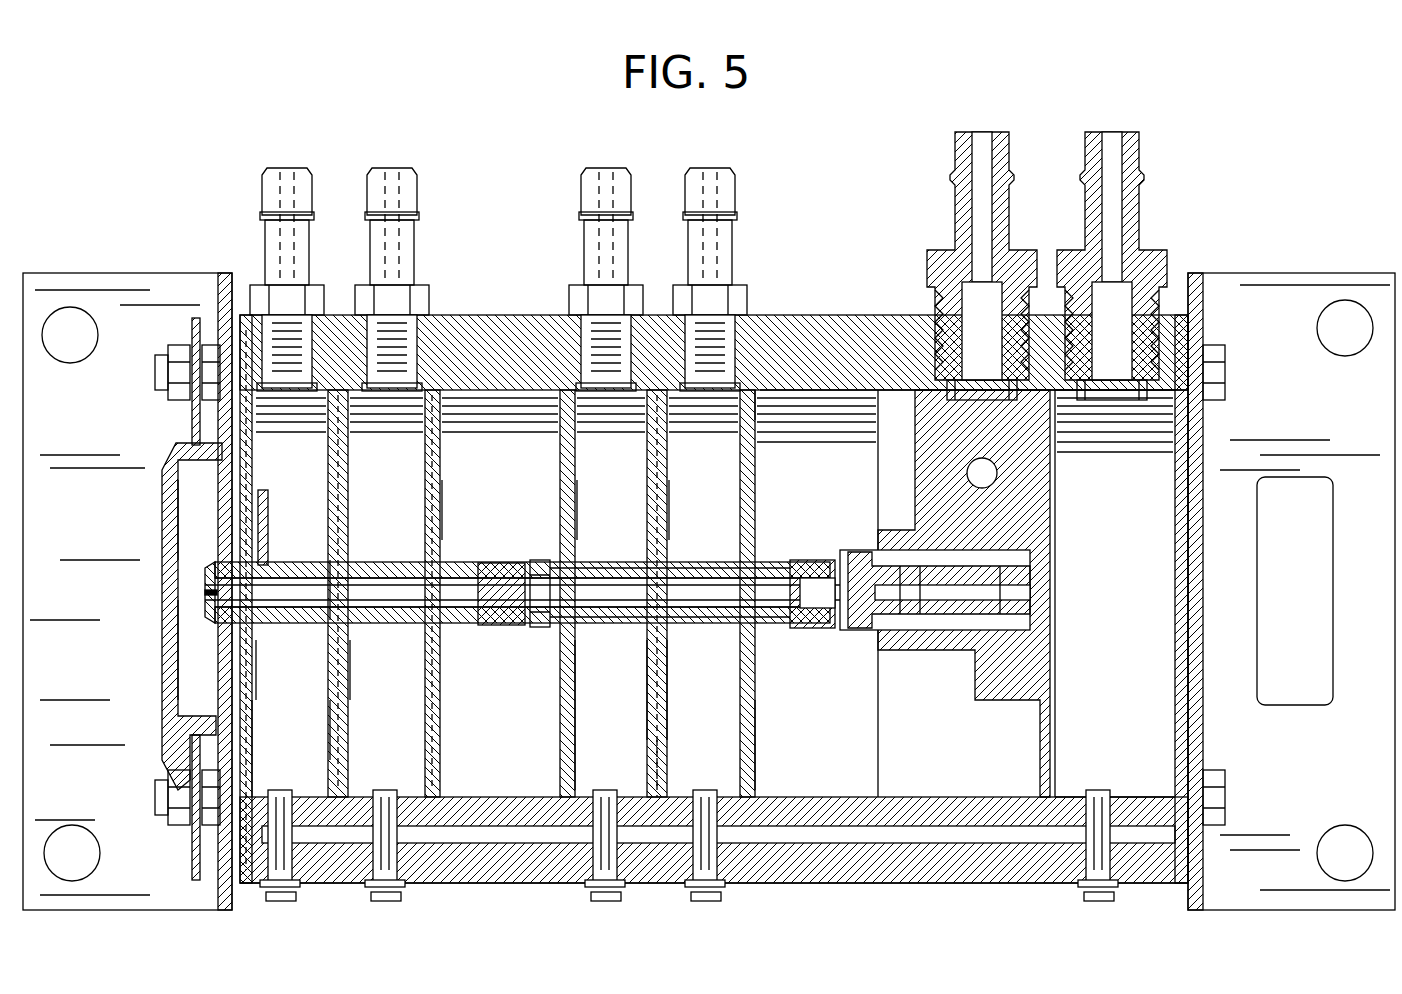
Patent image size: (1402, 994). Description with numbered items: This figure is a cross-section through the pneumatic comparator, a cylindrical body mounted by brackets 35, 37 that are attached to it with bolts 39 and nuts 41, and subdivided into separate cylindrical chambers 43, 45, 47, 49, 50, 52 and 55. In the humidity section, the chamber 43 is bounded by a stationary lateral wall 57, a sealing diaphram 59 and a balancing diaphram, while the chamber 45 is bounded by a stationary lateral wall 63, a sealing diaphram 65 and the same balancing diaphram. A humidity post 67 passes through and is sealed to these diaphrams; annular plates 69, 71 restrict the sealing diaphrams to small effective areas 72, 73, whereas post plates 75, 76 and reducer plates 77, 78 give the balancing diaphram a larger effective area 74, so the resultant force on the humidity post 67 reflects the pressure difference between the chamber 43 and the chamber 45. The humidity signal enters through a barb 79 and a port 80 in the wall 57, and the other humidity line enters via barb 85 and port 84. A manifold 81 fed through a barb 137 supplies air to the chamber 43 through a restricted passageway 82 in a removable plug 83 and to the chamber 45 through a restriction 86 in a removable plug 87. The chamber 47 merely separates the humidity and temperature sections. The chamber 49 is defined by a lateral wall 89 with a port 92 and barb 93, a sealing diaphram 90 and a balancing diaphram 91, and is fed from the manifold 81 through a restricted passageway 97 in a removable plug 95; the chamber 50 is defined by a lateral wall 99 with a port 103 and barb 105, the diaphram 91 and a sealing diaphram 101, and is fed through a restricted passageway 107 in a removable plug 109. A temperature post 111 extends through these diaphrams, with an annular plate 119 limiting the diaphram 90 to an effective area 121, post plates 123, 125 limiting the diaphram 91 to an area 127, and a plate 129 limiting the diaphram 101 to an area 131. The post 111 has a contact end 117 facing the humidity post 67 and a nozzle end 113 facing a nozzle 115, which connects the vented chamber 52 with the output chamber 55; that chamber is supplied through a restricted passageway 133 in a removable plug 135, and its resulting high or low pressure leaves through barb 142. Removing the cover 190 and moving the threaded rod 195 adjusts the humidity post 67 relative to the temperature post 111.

The bracket 35 is at (1298, 285).
The bracket 37 is at (110, 273).
The bolt 39 is at (155, 372).
The nut 41 is at (186, 360).
The chamber 43 is at (279, 702).
The chamber 45 is at (374, 696).
The chamber 47 is at (489, 472).
The chamber 49 is at (593, 501).
The chamber 50 is at (690, 492).
The chamber 52 is at (845, 400).
The output chamber 55 is at (1160, 455).
The stationary lateral wall 57 is at (258, 285).
The sealing diaphram 59 is at (252, 440).
The stationary lateral wall 63 is at (364, 285).
The sealing diaphram 65 is at (455, 355).
The humidity post 67 is at (297, 595).
The annular plate 69 is at (240, 482).
The annular plate 71 is at (455, 820).
The effective area 72 is at (215, 635).
The effective area 73 is at (440, 535).
The effective area 74 is at (330, 488).
The post plate 75 is at (328, 534).
The post plate 76 is at (348, 548).
The reducer plate 77 is at (330, 760).
The reducer plate 78 is at (348, 758).
The barb 79 is at (290, 190).
The port 80 is at (283, 392).
The manifold 81 is at (515, 833).
The restricted passageway 82 is at (297, 880).
The removable plug 83 is at (280, 900).
The port 84 is at (392, 392).
The barb 85 is at (395, 190).
The restriction 86 is at (402, 880).
The removable plug 87 is at (386, 900).
The lateral wall 89 is at (576, 290).
The sealing diaphram 90 is at (575, 522).
The balancing diaphram 91 is at (667, 522).
The port 92 is at (612, 392).
The barb 93 is at (606, 190).
The removable plug 95 is at (601, 890).
The restricted passageway 97 is at (612, 900).
The lateral wall 99 is at (680, 295).
The sealing diaphram 101 is at (755, 395).
The port 103 is at (712, 392).
The barb 105 is at (712, 170).
The restricted passageway 107 is at (703, 890).
The removable plug 109 is at (710, 900).
The temperature post 111 is at (712, 600).
The nozzle end 113 is at (812, 560).
The nozzle 115 is at (858, 552).
The contact end 117 is at (540, 560).
The annular plate 119 is at (560, 728).
The effective area 121 is at (560, 655).
The post plate 123 is at (647, 695).
The post plate 125 is at (667, 695).
The effective area 127 is at (662, 770).
The plate 129 is at (755, 762).
The effective area 131 is at (755, 650).
The restricted passageway 133 is at (1095, 892).
The removable plug 135 is at (1103, 900).
The barb 137 is at (958, 150).
The barb 142 is at (1140, 148).
The cover 190 is at (162, 720).
The threaded rod 195 is at (208, 592).